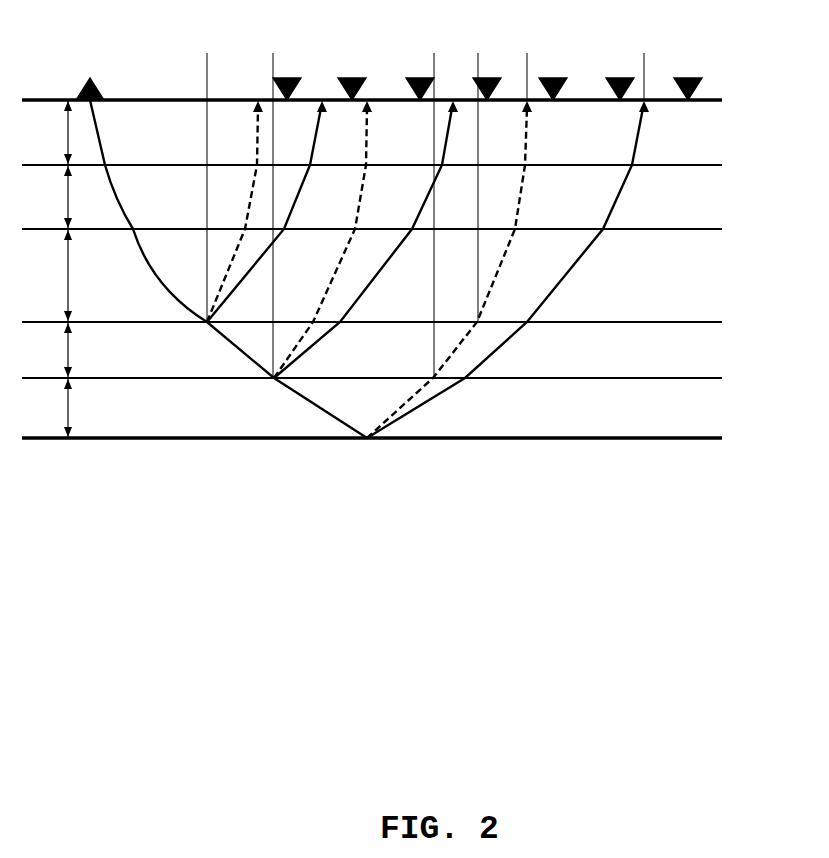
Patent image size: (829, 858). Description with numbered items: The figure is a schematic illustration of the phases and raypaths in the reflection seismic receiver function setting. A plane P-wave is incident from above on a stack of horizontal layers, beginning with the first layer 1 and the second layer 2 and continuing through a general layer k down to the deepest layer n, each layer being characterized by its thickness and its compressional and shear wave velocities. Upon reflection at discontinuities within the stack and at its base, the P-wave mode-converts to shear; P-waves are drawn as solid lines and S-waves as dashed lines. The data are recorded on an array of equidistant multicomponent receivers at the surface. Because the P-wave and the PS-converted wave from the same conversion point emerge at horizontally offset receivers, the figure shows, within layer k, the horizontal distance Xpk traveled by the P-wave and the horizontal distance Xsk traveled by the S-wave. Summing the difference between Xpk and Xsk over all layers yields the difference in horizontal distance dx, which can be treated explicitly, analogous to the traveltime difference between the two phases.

The first layer 1 is at (396, 142).
The second layer 2 is at (396, 208).
The layer k is at (396, 350).
The layer n is at (396, 417).
The P-wave horizontal distance in layer k Xpk is at (271, 63).
The S-wave horizontal distance in layer k Xsk is at (476, 63).
The difference in horizontal distance dx is at (642, 63).